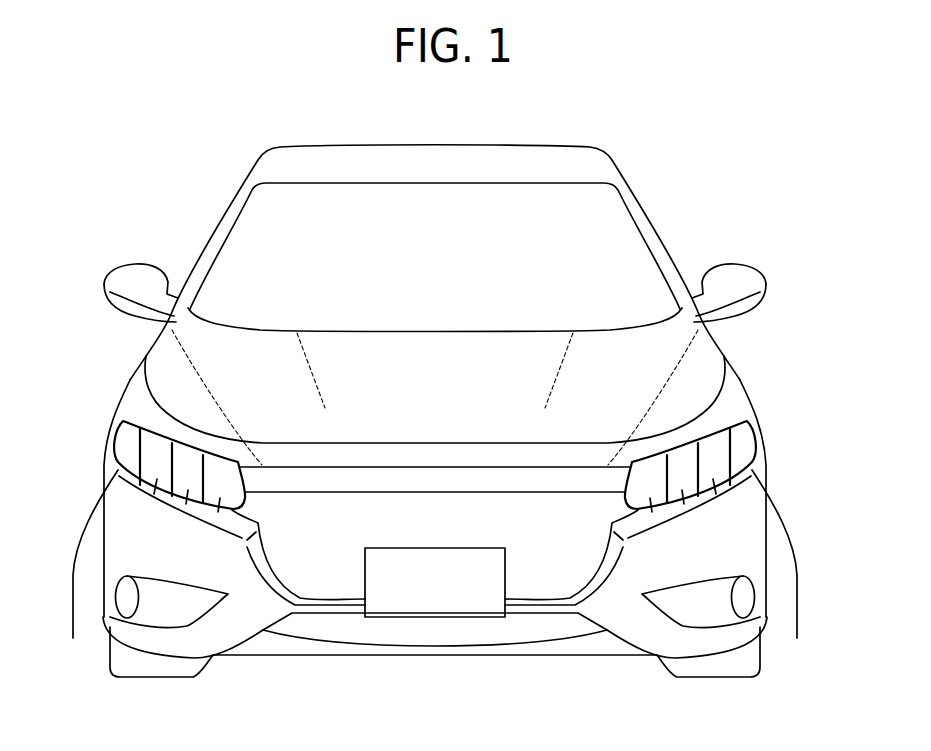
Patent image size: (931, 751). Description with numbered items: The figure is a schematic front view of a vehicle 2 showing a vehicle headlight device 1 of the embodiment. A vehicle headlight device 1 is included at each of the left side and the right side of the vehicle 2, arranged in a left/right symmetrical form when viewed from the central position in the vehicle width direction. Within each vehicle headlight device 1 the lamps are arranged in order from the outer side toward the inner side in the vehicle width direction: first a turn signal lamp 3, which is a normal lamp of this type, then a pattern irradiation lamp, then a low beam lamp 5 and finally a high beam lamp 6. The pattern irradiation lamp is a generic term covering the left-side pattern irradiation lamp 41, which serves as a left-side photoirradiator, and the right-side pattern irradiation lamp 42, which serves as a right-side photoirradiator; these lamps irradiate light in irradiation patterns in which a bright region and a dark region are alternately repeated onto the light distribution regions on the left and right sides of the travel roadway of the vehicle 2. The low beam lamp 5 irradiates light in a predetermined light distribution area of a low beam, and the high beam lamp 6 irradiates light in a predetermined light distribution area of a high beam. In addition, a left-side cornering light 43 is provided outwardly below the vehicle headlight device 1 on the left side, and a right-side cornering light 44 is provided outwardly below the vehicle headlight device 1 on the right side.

The vehicle headlight device 1 is at (147, 418).
The vehicle 2 is at (560, 146).
The turn signal lamp 3 is at (73, 638).
The left-side pattern irradiation lamp 41 is at (710, 482).
The right-side pattern irradiation lamp 42 is at (160, 482).
The left-side cornering light 43 is at (747, 598).
The right-side cornering light 44 is at (123, 598).
The low beam lamp 5 is at (188, 490).
The high beam lamp 6 is at (220, 498).